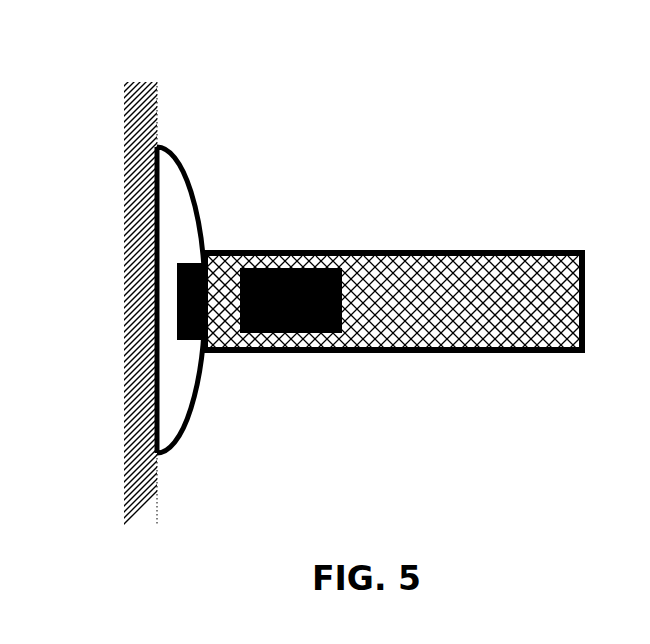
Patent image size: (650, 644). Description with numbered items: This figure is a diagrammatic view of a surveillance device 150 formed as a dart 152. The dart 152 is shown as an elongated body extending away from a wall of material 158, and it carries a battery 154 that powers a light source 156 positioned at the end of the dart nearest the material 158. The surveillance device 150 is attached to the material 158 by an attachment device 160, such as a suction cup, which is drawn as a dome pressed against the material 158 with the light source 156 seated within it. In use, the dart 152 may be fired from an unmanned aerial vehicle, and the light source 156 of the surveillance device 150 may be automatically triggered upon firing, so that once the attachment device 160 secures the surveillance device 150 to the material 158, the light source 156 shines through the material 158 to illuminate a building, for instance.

The surveillance device 150 is at (328, 250).
The dart 152 is at (453, 250).
The battery 154 is at (292, 333).
The light source 156 is at (192, 250).
The material 158 is at (140, 80).
The attachment device 160 is at (182, 165).